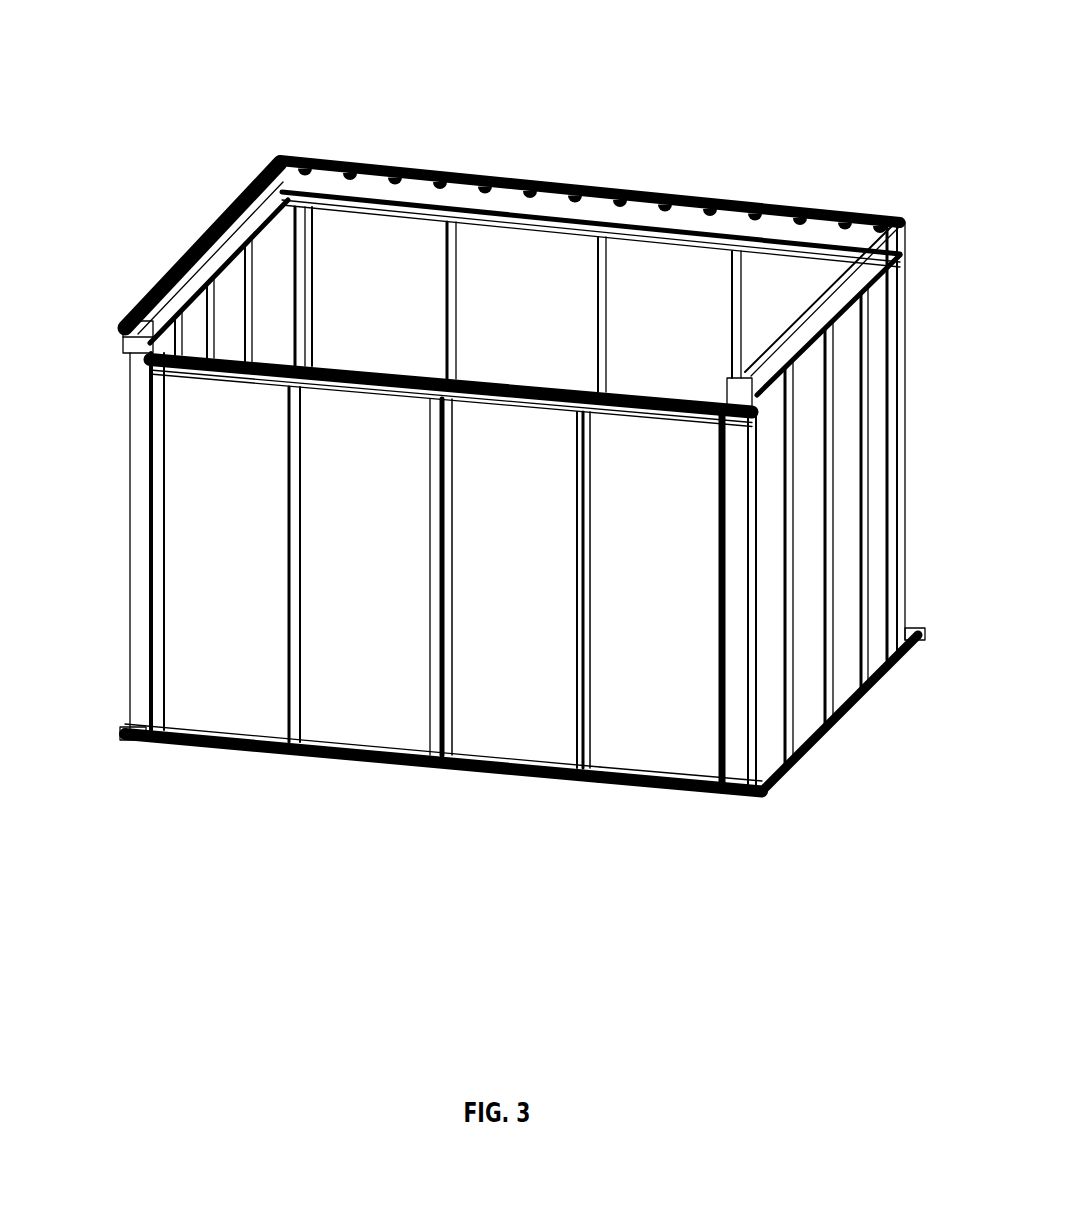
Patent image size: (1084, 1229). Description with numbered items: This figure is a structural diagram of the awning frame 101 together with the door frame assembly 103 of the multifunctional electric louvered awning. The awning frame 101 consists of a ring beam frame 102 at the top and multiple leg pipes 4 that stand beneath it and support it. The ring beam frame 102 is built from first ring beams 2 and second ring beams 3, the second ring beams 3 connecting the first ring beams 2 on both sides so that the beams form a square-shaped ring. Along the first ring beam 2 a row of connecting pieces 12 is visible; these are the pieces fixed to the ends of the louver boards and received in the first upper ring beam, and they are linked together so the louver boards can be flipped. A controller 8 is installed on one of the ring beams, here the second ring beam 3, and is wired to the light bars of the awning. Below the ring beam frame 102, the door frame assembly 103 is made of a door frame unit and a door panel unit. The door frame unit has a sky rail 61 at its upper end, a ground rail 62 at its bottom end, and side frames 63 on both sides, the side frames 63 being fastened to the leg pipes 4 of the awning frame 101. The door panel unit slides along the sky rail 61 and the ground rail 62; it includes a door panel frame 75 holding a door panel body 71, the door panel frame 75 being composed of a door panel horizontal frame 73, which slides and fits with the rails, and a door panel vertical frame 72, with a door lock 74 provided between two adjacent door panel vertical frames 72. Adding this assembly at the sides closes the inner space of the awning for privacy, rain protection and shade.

The awning frame 101 is at (843, 160).
The ring beam frame 102 is at (165, 157).
The first ring beam 2 is at (300, 157).
The connecting piece 12 is at (458, 188).
The second ring beam 3 is at (207, 232).
The controller 8 is at (155, 298).
The sky rail 61 is at (323, 370).
The leg pipe 4 is at (135, 388).
The door frame assembly 103 is at (70, 963).
The side frame 63 is at (155, 703).
The ground rail 62 is at (307, 750).
The door panel body 71 is at (360, 610).
The door lock 74 is at (450, 653).
The door panel frame 75 is at (710, 913).
The door panel vertical frame 72 is at (594, 737).
The door panel horizontal frame 73 is at (647, 787).